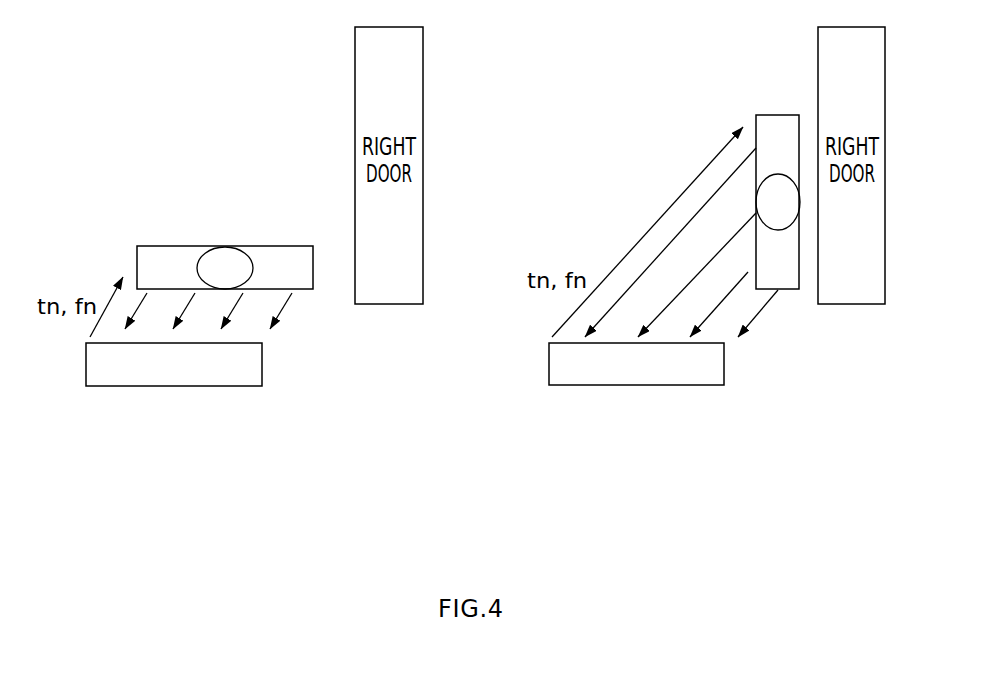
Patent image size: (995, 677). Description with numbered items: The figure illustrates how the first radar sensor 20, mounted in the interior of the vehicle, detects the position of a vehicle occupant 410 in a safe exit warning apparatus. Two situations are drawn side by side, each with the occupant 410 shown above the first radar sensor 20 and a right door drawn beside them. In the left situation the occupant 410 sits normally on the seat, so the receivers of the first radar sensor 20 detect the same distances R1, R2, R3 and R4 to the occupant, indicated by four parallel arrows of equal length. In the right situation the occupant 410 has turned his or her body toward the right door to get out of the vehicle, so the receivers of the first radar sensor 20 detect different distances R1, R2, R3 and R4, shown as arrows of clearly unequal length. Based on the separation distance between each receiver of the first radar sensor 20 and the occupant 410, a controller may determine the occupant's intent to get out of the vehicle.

The vehicle occupant 410 is at (162, 245).
The first radar sensor 20 is at (262, 362).
The distance R1 is at (440, 242).
The distance R2 is at (464, 275).
The distance R3 is at (484, 304).
The distance R4 is at (528, 313).